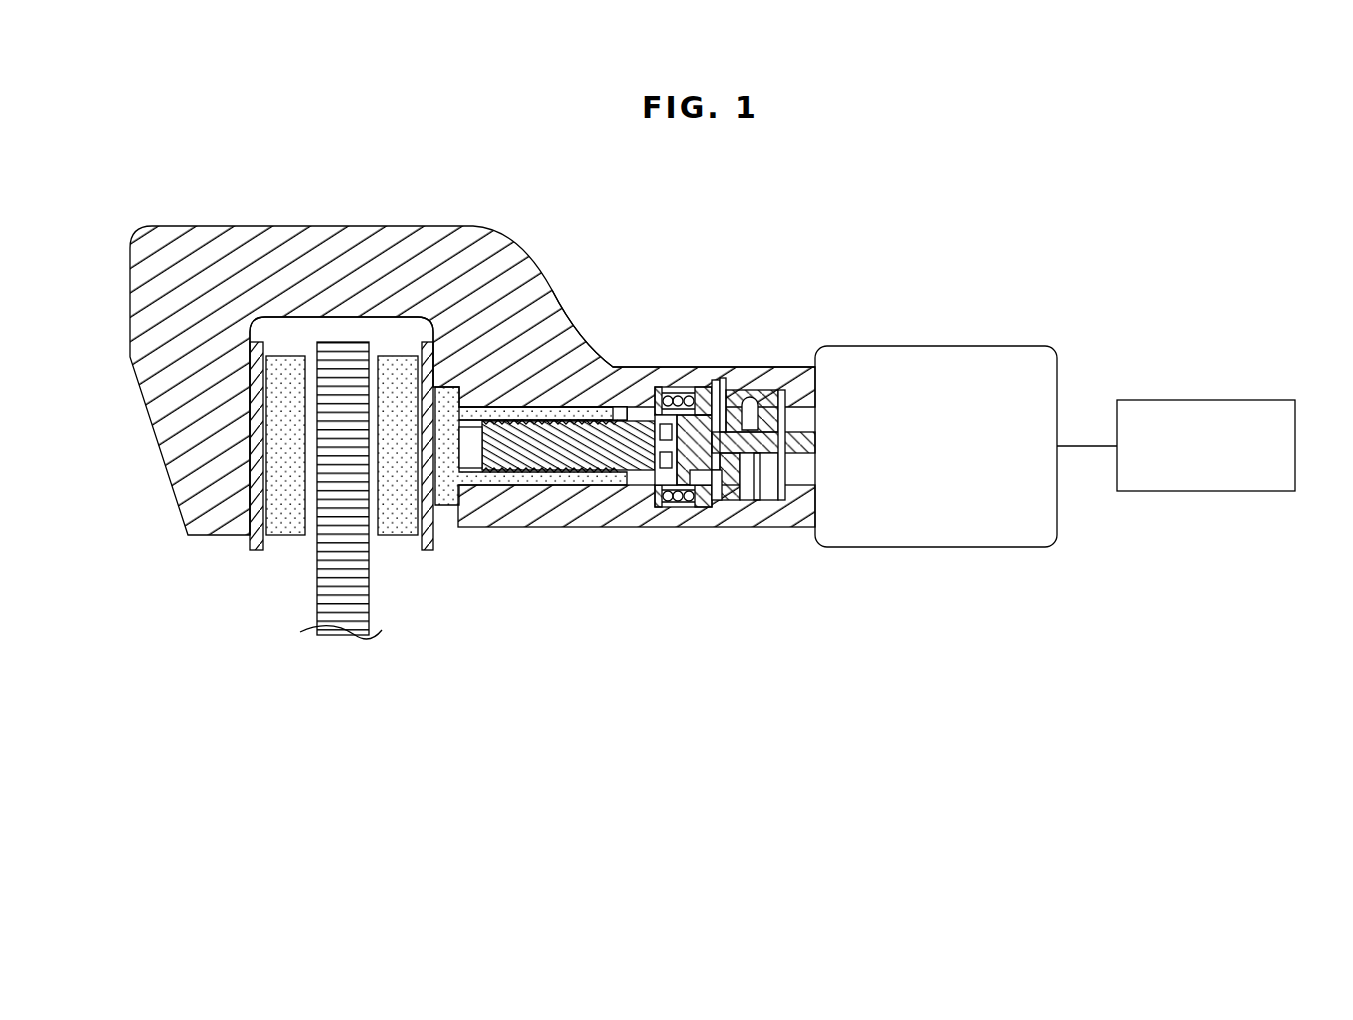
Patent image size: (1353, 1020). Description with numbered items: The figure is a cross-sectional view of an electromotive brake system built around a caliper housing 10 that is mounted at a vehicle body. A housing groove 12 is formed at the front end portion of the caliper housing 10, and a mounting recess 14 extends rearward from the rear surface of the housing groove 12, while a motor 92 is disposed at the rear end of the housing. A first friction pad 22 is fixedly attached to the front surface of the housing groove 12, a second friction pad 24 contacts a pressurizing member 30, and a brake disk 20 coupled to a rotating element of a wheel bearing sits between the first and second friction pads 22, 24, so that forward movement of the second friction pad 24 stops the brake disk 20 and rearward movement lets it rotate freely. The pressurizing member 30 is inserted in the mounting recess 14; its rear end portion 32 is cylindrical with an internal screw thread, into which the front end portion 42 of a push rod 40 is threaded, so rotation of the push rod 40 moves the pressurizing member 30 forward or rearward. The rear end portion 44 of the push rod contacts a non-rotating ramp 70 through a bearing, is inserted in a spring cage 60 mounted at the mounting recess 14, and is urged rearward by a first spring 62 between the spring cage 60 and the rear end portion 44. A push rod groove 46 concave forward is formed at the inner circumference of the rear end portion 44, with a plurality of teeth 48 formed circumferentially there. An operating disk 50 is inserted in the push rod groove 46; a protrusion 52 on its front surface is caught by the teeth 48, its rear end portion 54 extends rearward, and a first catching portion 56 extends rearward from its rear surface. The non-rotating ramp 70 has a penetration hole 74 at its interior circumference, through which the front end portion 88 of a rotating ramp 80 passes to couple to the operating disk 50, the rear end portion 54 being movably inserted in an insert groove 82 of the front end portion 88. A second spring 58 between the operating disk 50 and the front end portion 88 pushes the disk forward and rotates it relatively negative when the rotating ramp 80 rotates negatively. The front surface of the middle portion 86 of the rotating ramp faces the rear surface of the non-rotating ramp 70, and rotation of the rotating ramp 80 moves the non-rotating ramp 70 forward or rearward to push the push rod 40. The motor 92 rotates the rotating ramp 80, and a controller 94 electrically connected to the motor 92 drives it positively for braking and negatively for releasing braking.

The caliper housing 10 is at (383, 237).
The housing groove 12 is at (285, 328).
The mounting recess 14 is at (612, 366).
The brake disk 20 is at (362, 622).
The first friction pad 22 is at (283, 535).
The second friction pad 24 is at (403, 535).
The pressurizing member 30 is at (450, 388).
The rear end portion of the pressurizing member 32 is at (497, 410).
The push rod 40 is at (570, 482).
The front end portion of the push rod 42 is at (497, 458).
The rear end portion of the push rod 44 is at (695, 388).
The push rod groove 46 is at (630, 455).
The teeth 48 is at (650, 502).
The operating disk 50 is at (723, 385).
The protrusion 52 is at (657, 388).
The rear end portion of the operating disk 54 is at (788, 388).
The first catching portion 56 is at (700, 503).
The second spring 58 is at (717, 505).
The spring cage 60 is at (675, 507).
The first spring 62 is at (622, 405).
The non-rotating ramp 70 is at (740, 500).
The penetration hole 74 is at (757, 500).
The rotating ramp 80 is at (815, 435).
The insert groove 82 is at (813, 480).
The middle portion of the rotating ramp 86 is at (770, 395).
The front end portion of the rotating ramp 88 is at (765, 390).
The motor 92 is at (1005, 346).
The controller 94 is at (1200, 400).